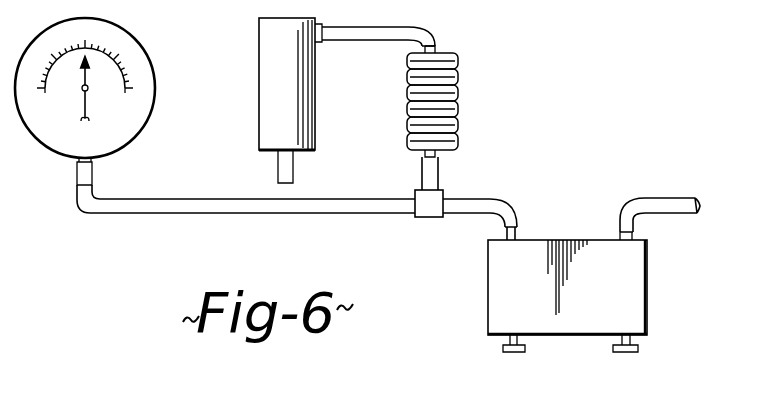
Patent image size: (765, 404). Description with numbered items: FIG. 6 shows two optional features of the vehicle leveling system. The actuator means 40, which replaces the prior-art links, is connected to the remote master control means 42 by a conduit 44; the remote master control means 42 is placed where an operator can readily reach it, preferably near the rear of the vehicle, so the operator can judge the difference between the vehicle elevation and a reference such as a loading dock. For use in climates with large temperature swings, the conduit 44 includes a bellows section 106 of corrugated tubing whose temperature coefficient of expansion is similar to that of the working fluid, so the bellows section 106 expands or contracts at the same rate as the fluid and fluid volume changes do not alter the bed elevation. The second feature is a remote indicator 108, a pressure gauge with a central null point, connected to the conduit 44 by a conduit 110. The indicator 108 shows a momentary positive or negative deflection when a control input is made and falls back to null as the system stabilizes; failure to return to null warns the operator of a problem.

The remote indicator 108 is at (143, 43).
The actuator means 40 is at (268, 129).
The conduit 44 is at (418, 27).
The bellows section 106 is at (459, 90).
The conduit 110 is at (195, 205).
The remote master control means 42 is at (498, 295).